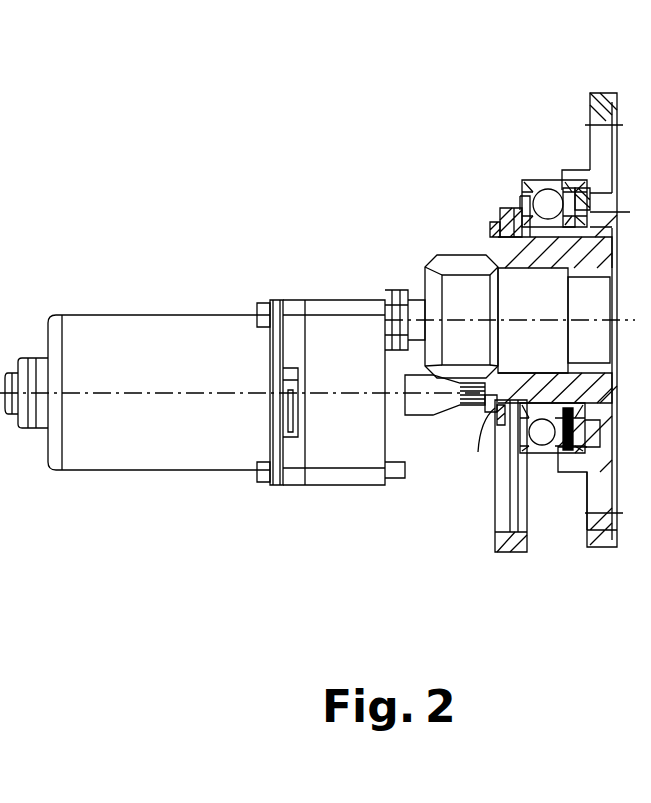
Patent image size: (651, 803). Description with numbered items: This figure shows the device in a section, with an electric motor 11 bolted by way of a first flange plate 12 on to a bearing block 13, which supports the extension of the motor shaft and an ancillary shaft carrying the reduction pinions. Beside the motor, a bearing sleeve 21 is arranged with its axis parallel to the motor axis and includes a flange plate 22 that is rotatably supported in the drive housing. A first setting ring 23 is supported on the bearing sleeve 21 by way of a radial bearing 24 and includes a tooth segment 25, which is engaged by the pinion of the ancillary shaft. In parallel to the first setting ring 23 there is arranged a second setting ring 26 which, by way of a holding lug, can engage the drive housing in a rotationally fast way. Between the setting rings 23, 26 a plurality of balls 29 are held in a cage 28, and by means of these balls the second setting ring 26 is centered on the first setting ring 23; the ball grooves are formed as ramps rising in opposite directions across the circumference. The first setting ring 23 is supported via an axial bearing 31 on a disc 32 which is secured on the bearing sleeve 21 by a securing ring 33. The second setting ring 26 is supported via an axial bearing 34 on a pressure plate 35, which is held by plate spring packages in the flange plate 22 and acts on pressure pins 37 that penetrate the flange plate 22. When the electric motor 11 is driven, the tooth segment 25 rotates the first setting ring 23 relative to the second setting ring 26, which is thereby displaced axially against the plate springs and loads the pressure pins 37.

The electric motor 11 is at (122, 333).
The first flange plate 12 is at (291, 330).
The bearing block 13 is at (335, 336).
The bearing sleeve 21 is at (452, 258).
The flange plate 22 is at (598, 102).
The first setting ring 23 is at (515, 448).
The radial bearing 24 is at (500, 410).
The tooth segment 25 is at (508, 552).
The second setting ring 26 is at (553, 457).
The cage 28 is at (545, 178).
The balls 29 is at (547, 455).
The axial bearing 31 is at (513, 205).
The disc 32 is at (500, 218).
The securing ring 33 is at (497, 233).
The axial bearing 34 is at (569, 187).
The pressure plate 35 is at (580, 190).
The pressure pins 37 is at (605, 212).